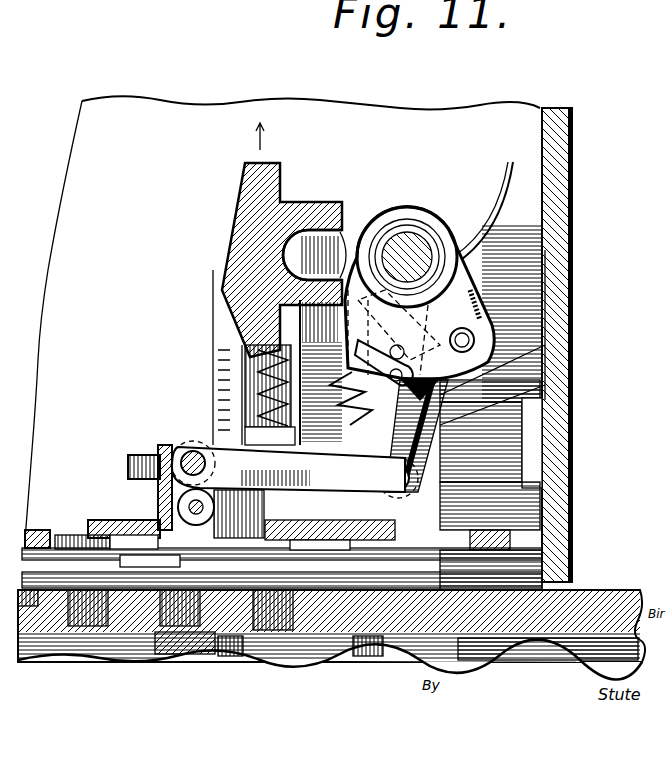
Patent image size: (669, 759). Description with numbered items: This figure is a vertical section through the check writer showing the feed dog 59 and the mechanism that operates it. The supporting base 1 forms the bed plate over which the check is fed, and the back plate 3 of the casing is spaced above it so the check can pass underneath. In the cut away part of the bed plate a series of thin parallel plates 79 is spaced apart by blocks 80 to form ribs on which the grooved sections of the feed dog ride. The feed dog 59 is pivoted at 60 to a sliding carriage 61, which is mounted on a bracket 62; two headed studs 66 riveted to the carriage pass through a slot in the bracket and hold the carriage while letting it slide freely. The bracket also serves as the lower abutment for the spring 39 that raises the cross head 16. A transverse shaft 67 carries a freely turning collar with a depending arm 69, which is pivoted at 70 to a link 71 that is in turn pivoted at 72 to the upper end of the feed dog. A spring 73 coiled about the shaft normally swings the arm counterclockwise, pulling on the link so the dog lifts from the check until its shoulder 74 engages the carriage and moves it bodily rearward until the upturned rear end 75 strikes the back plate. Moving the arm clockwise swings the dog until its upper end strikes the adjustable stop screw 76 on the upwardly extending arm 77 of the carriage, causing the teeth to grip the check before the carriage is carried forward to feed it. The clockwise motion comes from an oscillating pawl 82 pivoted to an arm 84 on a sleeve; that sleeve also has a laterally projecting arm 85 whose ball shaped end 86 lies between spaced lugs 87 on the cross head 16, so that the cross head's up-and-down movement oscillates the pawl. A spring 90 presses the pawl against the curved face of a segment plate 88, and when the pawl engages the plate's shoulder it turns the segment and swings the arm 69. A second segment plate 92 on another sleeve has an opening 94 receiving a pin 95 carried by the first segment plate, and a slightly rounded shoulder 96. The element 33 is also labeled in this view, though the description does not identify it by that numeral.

The supporting base 1 is at (590, 602).
The back plate 3 is at (556, 272).
The cross head 16 is at (250, 206).
The block 33 is at (440, 401).
The spring 39 is at (272, 352).
The feed dog 59 is at (197, 560).
The pivot 60 is at (190, 506).
The sliding carriage 61 is at (88, 534).
The bracket 62 is at (45, 527).
The headed studs 66 is at (162, 606).
The shaft 67 is at (430, 238).
The depending arm 69 is at (432, 450).
The pivot 70 is at (392, 478).
The link 71 is at (288, 469).
The pivot 72 is at (194, 456).
The spring 73 is at (400, 222).
The shoulder 74 is at (160, 524).
The upturned rear end 75 is at (450, 505).
The adjustable stop screw 76 is at (140, 455).
The upwardly extending arm 77 is at (165, 444).
The parallel plates 79 is at (92, 594).
The blocks 80 is at (150, 610).
The oscillating pawl 82 is at (352, 386).
The arm 84 is at (520, 395).
The laterally projecting arm 85 is at (338, 272).
The ball shaped end 86 is at (316, 245).
The spaced lugs 87 is at (322, 292).
The segment plate 88 is at (440, 330).
The spring 90 is at (360, 358).
The segment plate 92 is at (486, 302).
The opening 94 is at (520, 360).
The pin 95 is at (465, 340).
The shoulder 96 is at (355, 368).